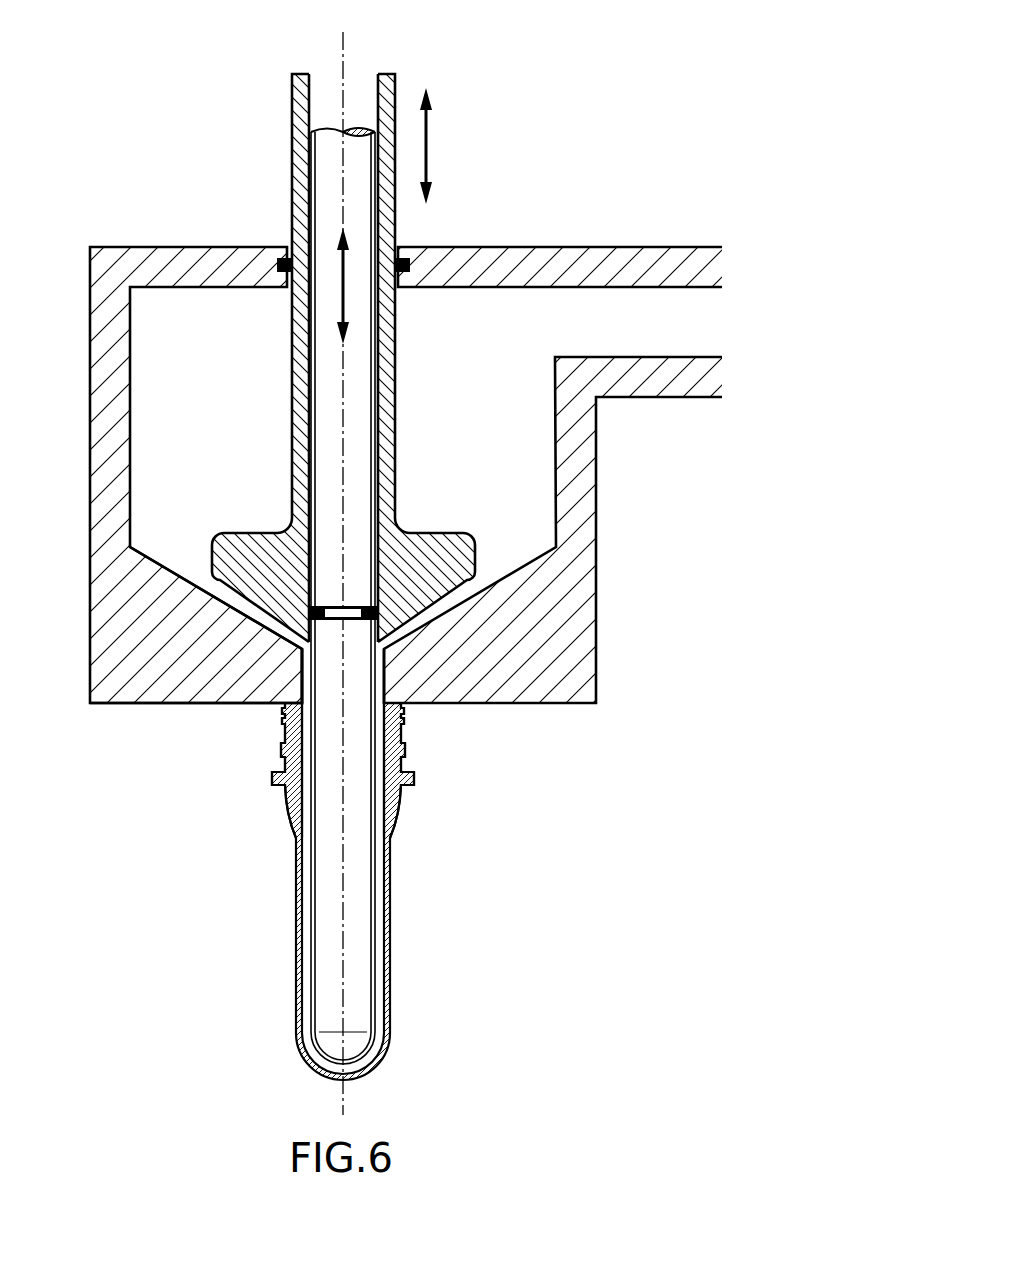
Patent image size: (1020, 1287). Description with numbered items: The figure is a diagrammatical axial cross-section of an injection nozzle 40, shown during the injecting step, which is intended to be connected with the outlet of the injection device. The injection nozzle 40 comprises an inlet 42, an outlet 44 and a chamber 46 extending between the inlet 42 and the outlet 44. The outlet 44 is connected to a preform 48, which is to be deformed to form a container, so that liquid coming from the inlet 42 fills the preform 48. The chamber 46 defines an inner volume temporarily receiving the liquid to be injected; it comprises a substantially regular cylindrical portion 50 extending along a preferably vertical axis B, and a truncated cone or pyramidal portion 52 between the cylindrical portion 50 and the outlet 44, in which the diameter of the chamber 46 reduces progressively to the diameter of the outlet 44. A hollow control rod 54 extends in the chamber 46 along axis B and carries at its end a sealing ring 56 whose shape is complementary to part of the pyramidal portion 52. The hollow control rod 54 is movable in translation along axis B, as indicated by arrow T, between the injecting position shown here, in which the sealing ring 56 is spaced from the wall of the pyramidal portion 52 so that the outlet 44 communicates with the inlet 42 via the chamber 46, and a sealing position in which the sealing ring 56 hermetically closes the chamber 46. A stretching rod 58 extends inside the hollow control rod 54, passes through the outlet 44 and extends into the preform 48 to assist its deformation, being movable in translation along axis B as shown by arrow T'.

The injection nozzle 40 is at (401, 446).
The inlet 42 is at (698, 322).
The outlet 44 is at (380, 688).
The chamber 46 is at (162, 428).
The preform 48 is at (290, 807).
The regular cylindrical portion 50 is at (517, 478).
The pyramidal portion 52 is at (203, 580).
The hollow control rod 54 is at (383, 428).
The sealing ring 56 is at (455, 563).
The stretching rod 58 is at (355, 965).
The axis B is at (345, 58).
The arrow of translation of the hollow control rod T is at (440, 146).
The arrow of translation of the stretching rod T' is at (294, 270).